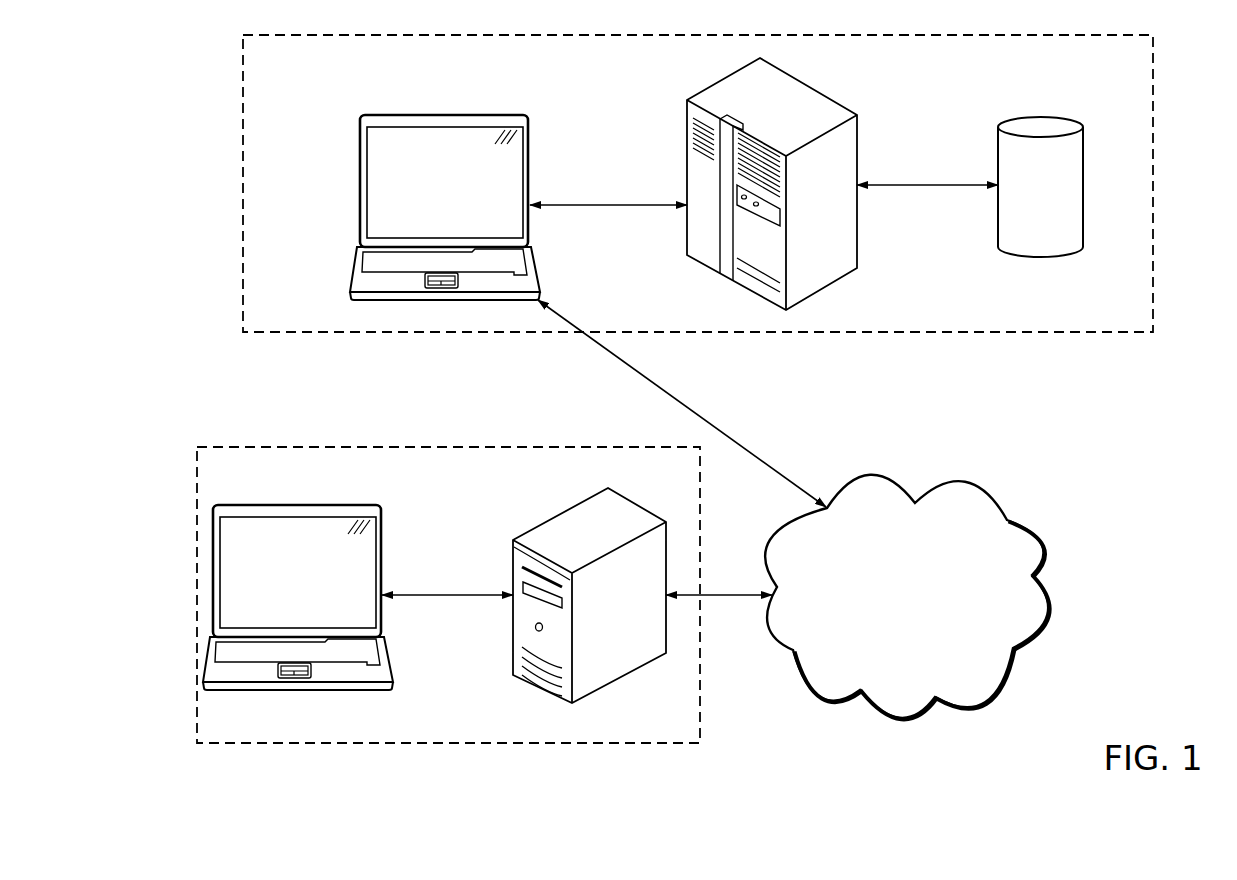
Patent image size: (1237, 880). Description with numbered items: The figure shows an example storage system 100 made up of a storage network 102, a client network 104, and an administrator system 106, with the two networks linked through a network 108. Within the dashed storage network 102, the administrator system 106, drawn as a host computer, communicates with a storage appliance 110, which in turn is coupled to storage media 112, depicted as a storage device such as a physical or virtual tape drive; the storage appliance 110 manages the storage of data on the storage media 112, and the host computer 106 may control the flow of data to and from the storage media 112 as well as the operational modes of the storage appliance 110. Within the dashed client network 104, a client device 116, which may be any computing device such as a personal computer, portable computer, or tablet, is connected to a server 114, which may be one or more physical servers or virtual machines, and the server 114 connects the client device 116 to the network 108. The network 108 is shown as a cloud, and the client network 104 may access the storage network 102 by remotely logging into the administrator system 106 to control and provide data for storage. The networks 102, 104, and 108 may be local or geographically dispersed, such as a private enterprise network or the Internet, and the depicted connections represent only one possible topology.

The storage system 100 is at (1088, 404).
The storage network 102 is at (698, 183).
The client network 104 is at (448, 595).
The administrator system 106 is at (360, 174).
The network 108 is at (907, 597).
The storage appliance 110 is at (687, 167).
The storage media 112 is at (1083, 167).
The server 114 is at (627, 675).
The client device 116 is at (383, 511).